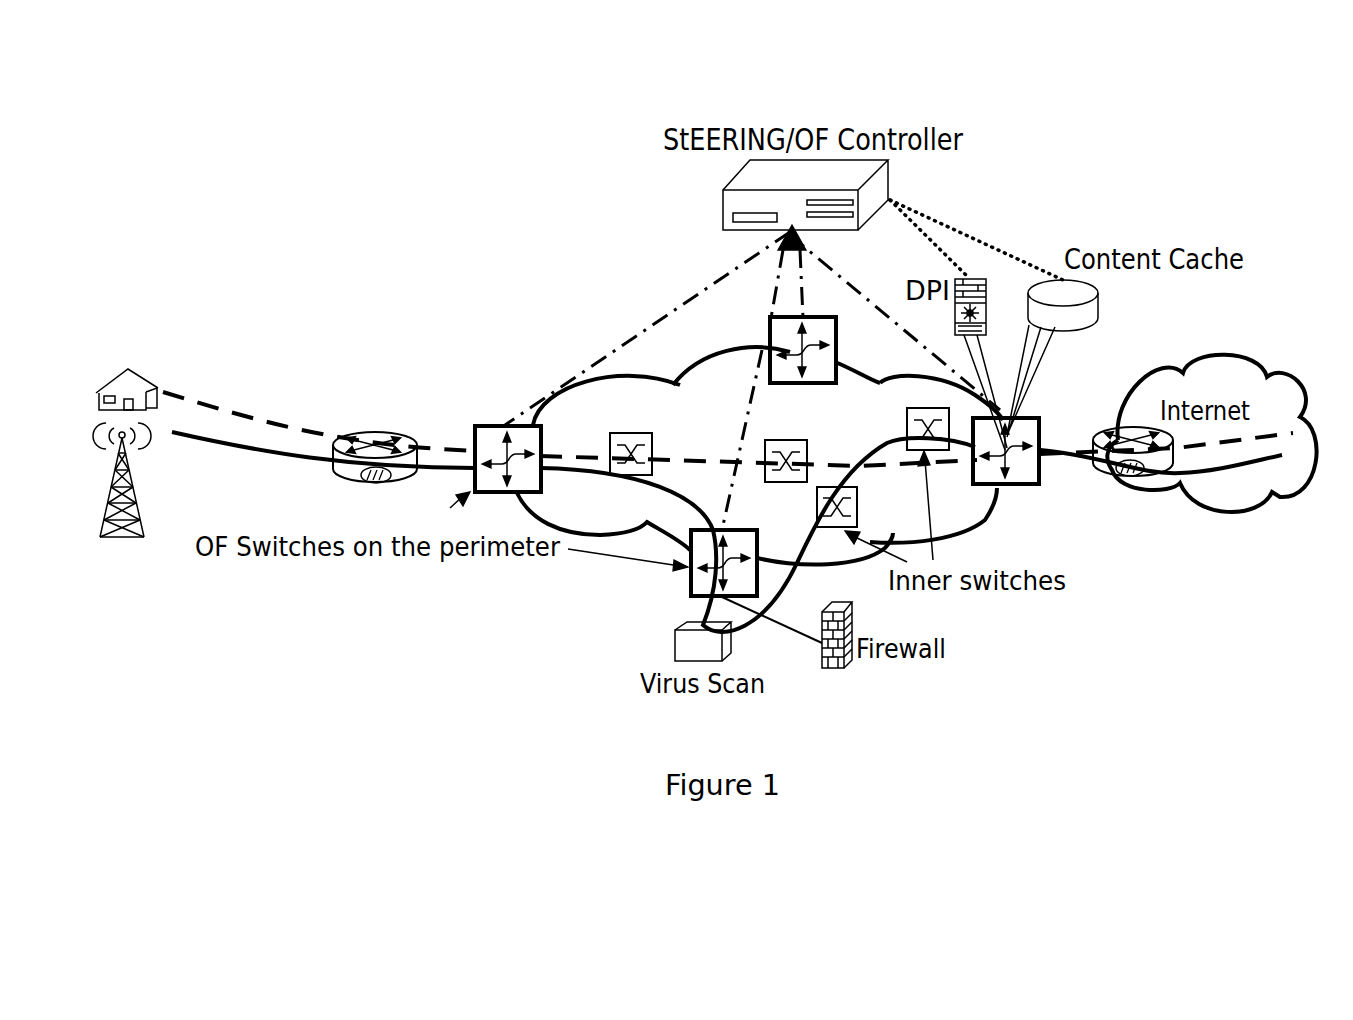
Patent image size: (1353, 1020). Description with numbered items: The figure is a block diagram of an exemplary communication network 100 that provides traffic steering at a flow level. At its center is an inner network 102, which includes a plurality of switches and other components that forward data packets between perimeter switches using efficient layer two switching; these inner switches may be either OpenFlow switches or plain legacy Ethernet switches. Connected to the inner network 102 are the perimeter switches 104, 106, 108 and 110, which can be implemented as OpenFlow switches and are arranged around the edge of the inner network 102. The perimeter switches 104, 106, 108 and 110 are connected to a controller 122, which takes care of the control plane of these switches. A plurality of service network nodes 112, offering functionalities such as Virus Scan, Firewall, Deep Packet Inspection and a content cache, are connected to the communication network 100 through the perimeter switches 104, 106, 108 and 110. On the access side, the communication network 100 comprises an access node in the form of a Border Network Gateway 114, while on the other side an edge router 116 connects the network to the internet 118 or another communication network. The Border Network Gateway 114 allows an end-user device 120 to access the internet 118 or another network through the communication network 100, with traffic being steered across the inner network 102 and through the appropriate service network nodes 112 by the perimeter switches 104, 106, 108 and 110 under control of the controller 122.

The communication network 100 is at (373, 226).
The inner network 102 is at (708, 418).
The perimeter switch 104 is at (490, 423).
The perimeter switch 106 is at (837, 348).
The perimeter switch 108 is at (1022, 490).
The perimeter switch 110 is at (690, 585).
The service network nodes 112 is at (987, 290).
The Border Network Gateway 114 is at (380, 432).
The edge router 116 is at (1120, 490).
The internet 118 is at (1237, 500).
The end-user device 120 is at (148, 372).
The controller 122 is at (723, 195).